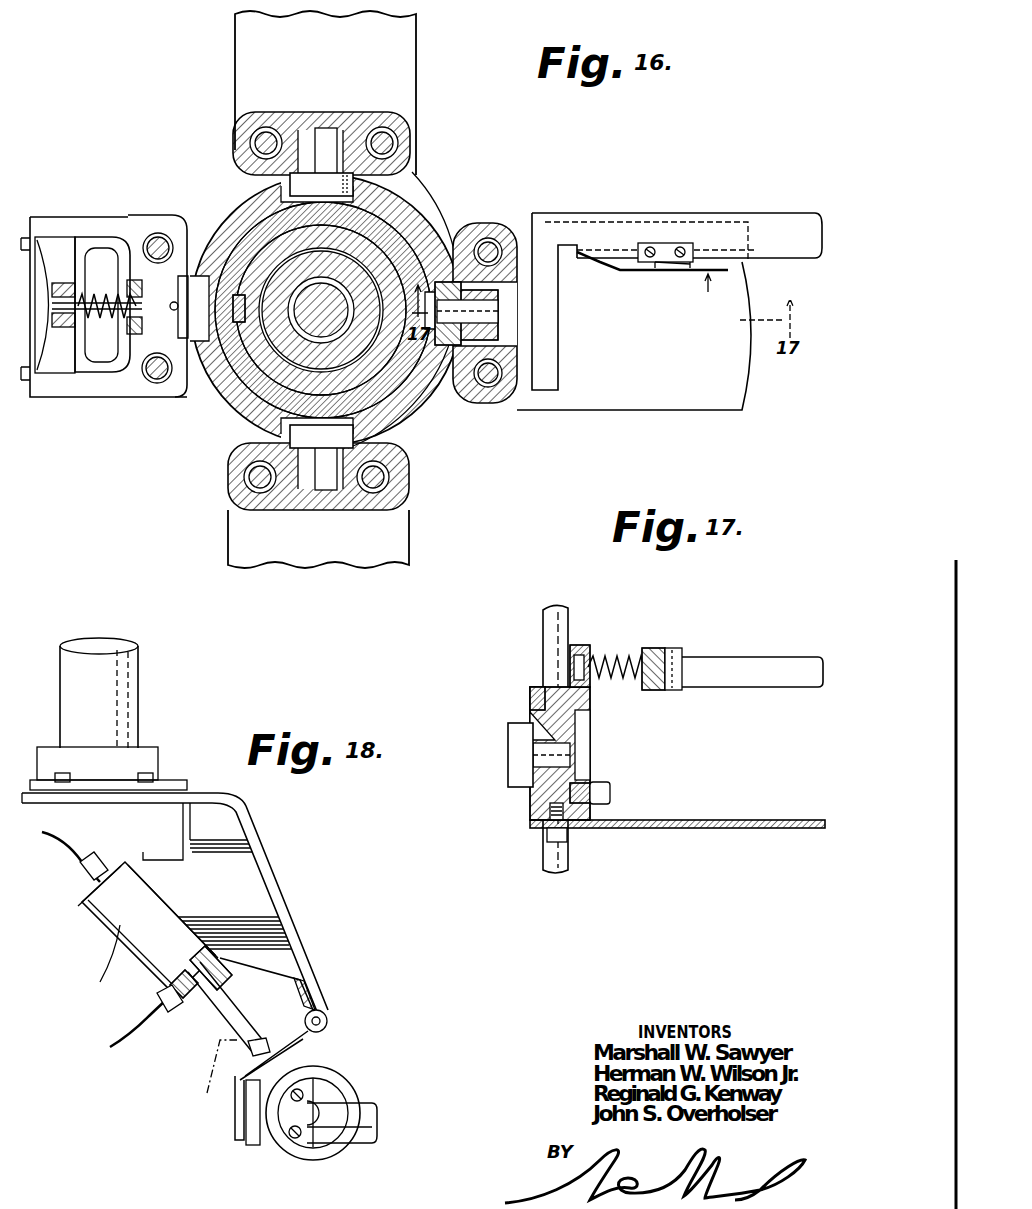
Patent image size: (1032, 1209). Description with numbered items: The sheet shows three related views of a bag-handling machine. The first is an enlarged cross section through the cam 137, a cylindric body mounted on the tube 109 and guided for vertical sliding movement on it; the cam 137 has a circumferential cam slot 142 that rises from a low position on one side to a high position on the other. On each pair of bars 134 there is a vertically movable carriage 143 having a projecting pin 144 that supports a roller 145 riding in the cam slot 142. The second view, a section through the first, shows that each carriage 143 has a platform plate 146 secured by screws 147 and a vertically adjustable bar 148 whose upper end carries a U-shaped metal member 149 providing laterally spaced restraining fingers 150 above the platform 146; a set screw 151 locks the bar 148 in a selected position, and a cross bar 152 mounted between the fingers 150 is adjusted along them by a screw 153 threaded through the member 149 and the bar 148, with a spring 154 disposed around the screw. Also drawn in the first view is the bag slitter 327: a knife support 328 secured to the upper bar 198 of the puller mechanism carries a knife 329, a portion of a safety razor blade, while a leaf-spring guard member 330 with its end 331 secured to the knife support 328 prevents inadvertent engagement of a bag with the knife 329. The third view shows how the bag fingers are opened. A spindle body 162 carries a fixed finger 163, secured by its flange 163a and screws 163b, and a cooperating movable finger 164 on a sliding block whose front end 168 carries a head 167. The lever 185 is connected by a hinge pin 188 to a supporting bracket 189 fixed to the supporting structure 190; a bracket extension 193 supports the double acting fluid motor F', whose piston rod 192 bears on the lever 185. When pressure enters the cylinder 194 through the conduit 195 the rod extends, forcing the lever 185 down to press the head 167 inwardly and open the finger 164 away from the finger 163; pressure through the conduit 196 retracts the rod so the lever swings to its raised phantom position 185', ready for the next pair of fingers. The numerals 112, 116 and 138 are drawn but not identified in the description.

In FIG. 16, the tube 109 is at (323, 332).
In FIG. 16, the bearing ring 112 is at (347, 362).
In FIG. 16, the shaft bore 116 is at (378, 365).
In FIG. 16, the bars 134 is at (370, 112).
In FIG. 16, the cam 137 is at (420, 232).
In FIG. 16, the pad 138 is at (239, 290).
In FIG. 16, the cam slot 142 is at (390, 207).
In FIG. 16, the carriage 143 is at (410, 500).
In FIG. 17, the carriage 143 is at (545, 690).
In FIG. 16, the pin 144 is at (470, 330).
In FIG. 17, the pin 144 is at (540, 755).
In FIG. 16, the roller 145 is at (455, 345).
In FIG. 17, the roller 145 is at (510, 735).
In FIG. 17, the platform plate 146 is at (695, 820).
In FIG. 17, the screws 147 is at (570, 840).
In FIG. 16, the bar 148 is at (178, 218).
In FIG. 17, the bar 148 is at (585, 742).
In FIG. 16, the U-shaped metal member 149 is at (120, 325).
In FIG. 17, the U-shaped metal member 149 is at (604, 660).
In FIG. 16, the restraining fingers 150 is at (93, 240).
In FIG. 17, the restraining fingers 150 is at (745, 672).
In FIG. 17, the set screw 151 is at (605, 790).
In FIG. 16, the cross bar 152 is at (55, 250).
In FIG. 17, the cross bar 152 is at (660, 650).
In FIG. 16, the screw 153 is at (62, 300).
In FIG. 17, the screw 153 is at (580, 650).
In FIG. 16, the spring 154 is at (70, 328).
In FIG. 17, the spring 154 is at (625, 660).
In FIG. 18, the body 162 is at (340, 1090).
In FIG. 18, the fixed finger 163 is at (305, 1110).
In FIG. 18, the plate or flange 163a is at (308, 1160).
In FIG. 18, the screws 163b is at (290, 1138).
In FIG. 18, the movable finger 164 is at (345, 1140).
In FIG. 18, the head or cap 167 is at (250, 1142).
In FIG. 18, the front end 168 is at (262, 1090).
In FIG. 18, the lever 185 is at (290, 1055).
In FIG. 18, the raised position of lever 185' is at (188, 1069).
In FIG. 18, the hinge pin 188 is at (327, 1018).
In FIG. 18, the supporting bracket 189 is at (283, 920).
In FIG. 18, the supporting structure 190 is at (180, 790).
In FIG. 18, the piston rod 192 is at (225, 1020).
In FIG. 18, the bracket extension 193 is at (230, 897).
In FIG. 18, the cylinder 194 is at (160, 915).
In FIG. 18, the conduit 195 is at (58, 848).
In FIG. 18, the conduit 196 is at (130, 1040).
In FIG. 16, the upper bar 198 is at (765, 232).
In FIG. 16, the bag slitter 327 is at (634, 311).
In FIG. 16, the knife support 328 is at (660, 250).
In FIG. 16, the knife 329 is at (678, 270).
In FIG. 16, the guard member 330 is at (640, 270).
In FIG. 16, the end of guard member 331 is at (598, 268).
In FIG. 18, the double acting fluid operated motor F' is at (101, 957).